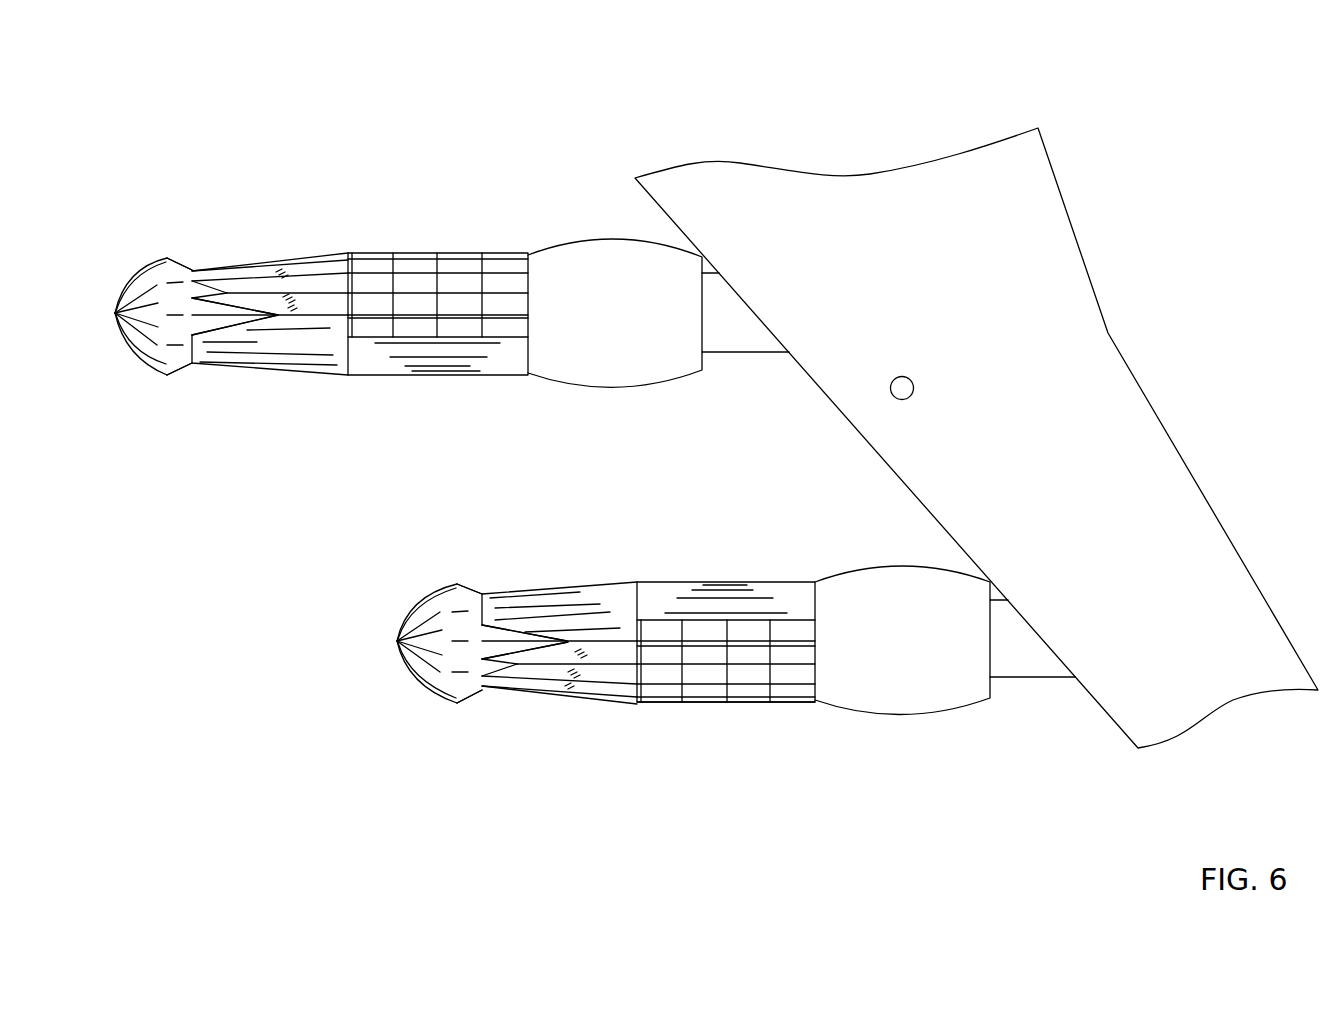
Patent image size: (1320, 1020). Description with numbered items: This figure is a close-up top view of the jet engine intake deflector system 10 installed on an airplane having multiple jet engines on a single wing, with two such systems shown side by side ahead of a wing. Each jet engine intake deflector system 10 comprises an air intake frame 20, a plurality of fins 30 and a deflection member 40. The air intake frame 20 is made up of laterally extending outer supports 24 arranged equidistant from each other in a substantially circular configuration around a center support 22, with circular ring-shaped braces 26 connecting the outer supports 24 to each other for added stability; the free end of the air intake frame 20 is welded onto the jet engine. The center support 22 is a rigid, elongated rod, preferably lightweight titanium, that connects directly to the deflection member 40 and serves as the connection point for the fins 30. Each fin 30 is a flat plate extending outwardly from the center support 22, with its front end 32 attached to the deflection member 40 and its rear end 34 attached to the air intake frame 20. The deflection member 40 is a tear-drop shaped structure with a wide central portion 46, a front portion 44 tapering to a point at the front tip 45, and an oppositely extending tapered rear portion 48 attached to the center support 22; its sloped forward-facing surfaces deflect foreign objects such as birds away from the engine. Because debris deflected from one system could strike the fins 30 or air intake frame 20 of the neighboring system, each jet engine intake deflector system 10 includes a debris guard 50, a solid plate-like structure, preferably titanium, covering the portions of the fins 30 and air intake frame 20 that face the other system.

The jet engine intake deflector system 10 is at (203, 752).
The air intake frame 20 is at (425, 225).
The center support 22 is at (380, 320).
The outer supports 24 is at (371, 275).
The braces 26 is at (490, 253).
The fins 30 is at (268, 233).
The front end 32 is at (488, 693).
The rear end 34 is at (628, 702).
The deflection member 40 is at (155, 258).
The front portion 44 is at (118, 300).
The front tip 45 is at (111, 335).
The central portion 46 is at (168, 257).
The rear portion 48 is at (262, 333).
The debris guard 50 is at (497, 372).